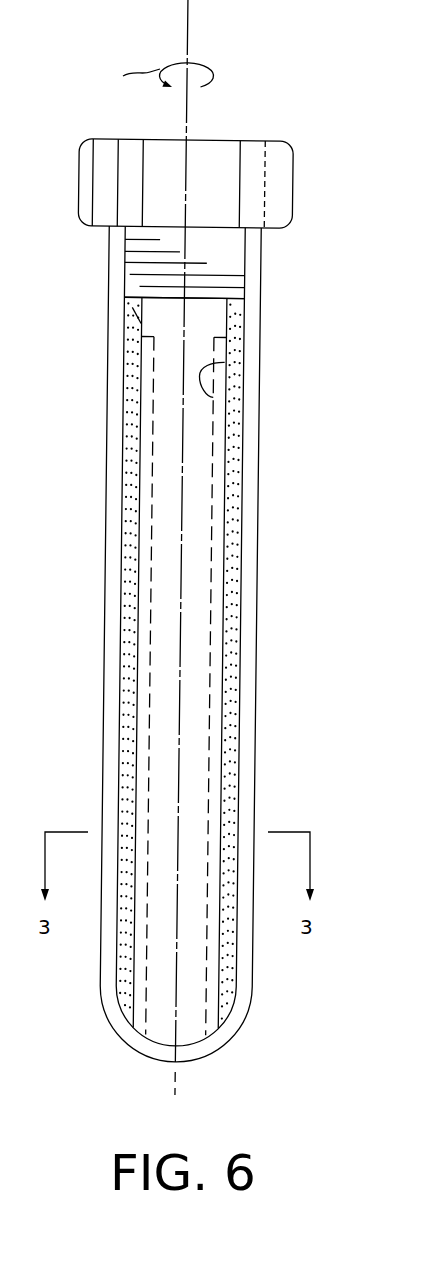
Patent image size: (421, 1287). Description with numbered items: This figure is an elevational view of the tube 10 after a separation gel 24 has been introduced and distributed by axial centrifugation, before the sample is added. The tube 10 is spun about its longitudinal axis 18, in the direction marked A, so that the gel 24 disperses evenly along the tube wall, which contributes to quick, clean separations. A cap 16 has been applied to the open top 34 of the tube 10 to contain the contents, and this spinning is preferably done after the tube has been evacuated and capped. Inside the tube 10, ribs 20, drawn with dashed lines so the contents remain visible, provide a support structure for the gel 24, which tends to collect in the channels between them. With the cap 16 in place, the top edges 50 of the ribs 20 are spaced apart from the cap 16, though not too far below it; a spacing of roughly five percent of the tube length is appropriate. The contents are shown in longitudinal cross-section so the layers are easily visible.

The tube 10 is at (226, 79).
The cap 16 is at (273, 212).
The longitudinal axis 18 is at (192, 2).
The ribs 20 is at (239, 367).
The separation gel 24 is at (125, 610).
The open top 34 is at (99, 235).
The top edges 50 is at (122, 304).